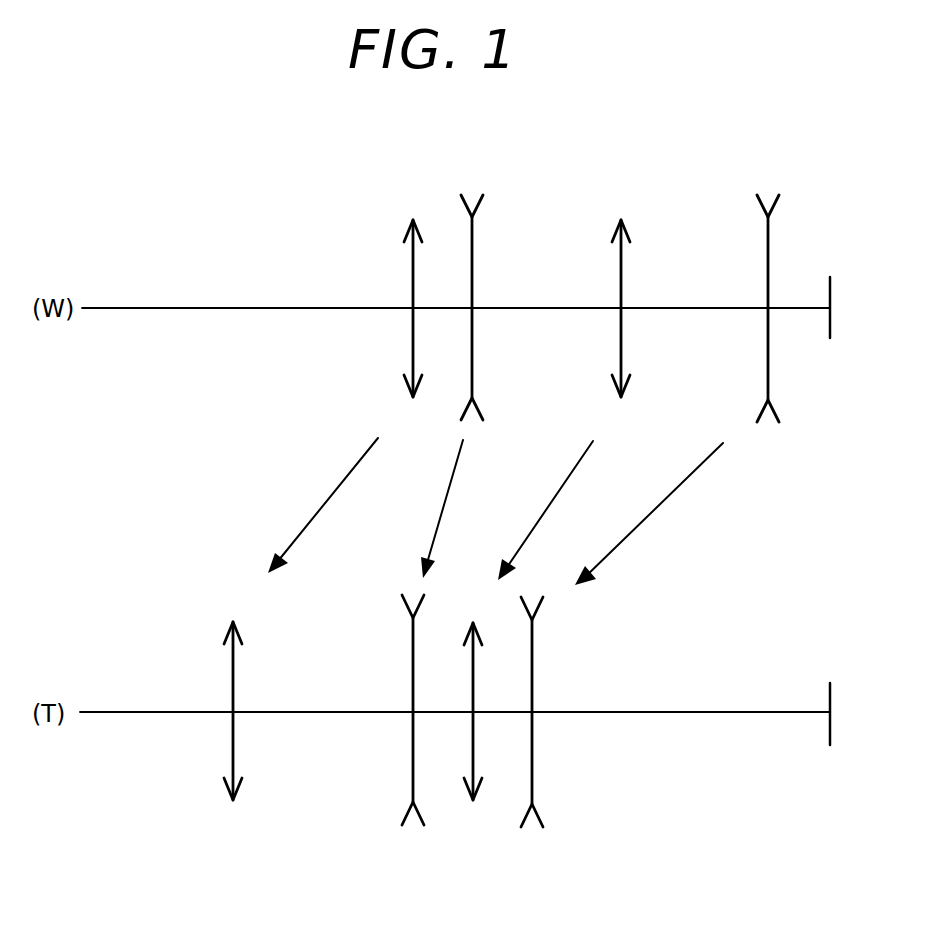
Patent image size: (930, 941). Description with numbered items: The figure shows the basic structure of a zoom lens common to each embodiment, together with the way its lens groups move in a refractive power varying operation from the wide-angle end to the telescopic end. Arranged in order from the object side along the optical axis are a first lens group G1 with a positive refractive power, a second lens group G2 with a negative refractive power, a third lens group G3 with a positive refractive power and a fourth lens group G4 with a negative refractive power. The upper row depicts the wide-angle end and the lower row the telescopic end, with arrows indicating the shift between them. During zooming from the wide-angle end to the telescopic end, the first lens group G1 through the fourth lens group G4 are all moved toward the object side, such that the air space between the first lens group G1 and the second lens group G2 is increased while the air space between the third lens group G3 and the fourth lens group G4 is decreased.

The first lens group G1 is at (325, 479).
The second lens group G2 is at (447, 491).
The third lens group G3 is at (552, 479).
The fourth lens group G4 is at (655, 492).